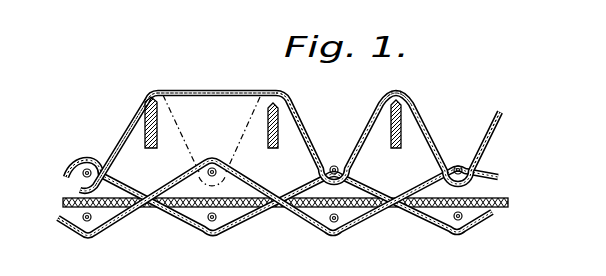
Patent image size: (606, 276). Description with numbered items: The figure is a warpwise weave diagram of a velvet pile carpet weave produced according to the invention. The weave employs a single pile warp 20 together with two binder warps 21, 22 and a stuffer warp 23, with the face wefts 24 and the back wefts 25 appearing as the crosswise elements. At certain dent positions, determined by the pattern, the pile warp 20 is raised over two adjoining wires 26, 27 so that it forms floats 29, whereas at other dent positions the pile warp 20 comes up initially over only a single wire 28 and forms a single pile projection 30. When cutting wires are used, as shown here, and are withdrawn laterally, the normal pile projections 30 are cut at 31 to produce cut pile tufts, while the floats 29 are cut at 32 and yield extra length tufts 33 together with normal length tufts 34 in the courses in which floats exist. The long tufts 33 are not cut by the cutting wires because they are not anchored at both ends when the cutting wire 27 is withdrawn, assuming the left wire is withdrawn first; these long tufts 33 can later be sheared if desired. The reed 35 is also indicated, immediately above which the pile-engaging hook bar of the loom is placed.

The pile warp 20 is at (146, 92).
The binder warp 21 is at (88, 157).
The binder warp 22 is at (88, 239).
The stuffer warp 23 is at (509, 202).
The face weft 24 is at (64, 169).
The back weft 25 is at (61, 223).
The wire 26 is at (151, 149).
The wire 27 is at (279, 121).
The wire 28 is at (396, 149).
The float 29 is at (222, 89).
The pile projection 30 is at (378, 98).
The cut 31 is at (413, 81).
The cut 32 is at (151, 88).
The extra length tuft 33 is at (244, 89).
The normal length tuft 34 is at (132, 118).
The reed 35 is at (419, 114).